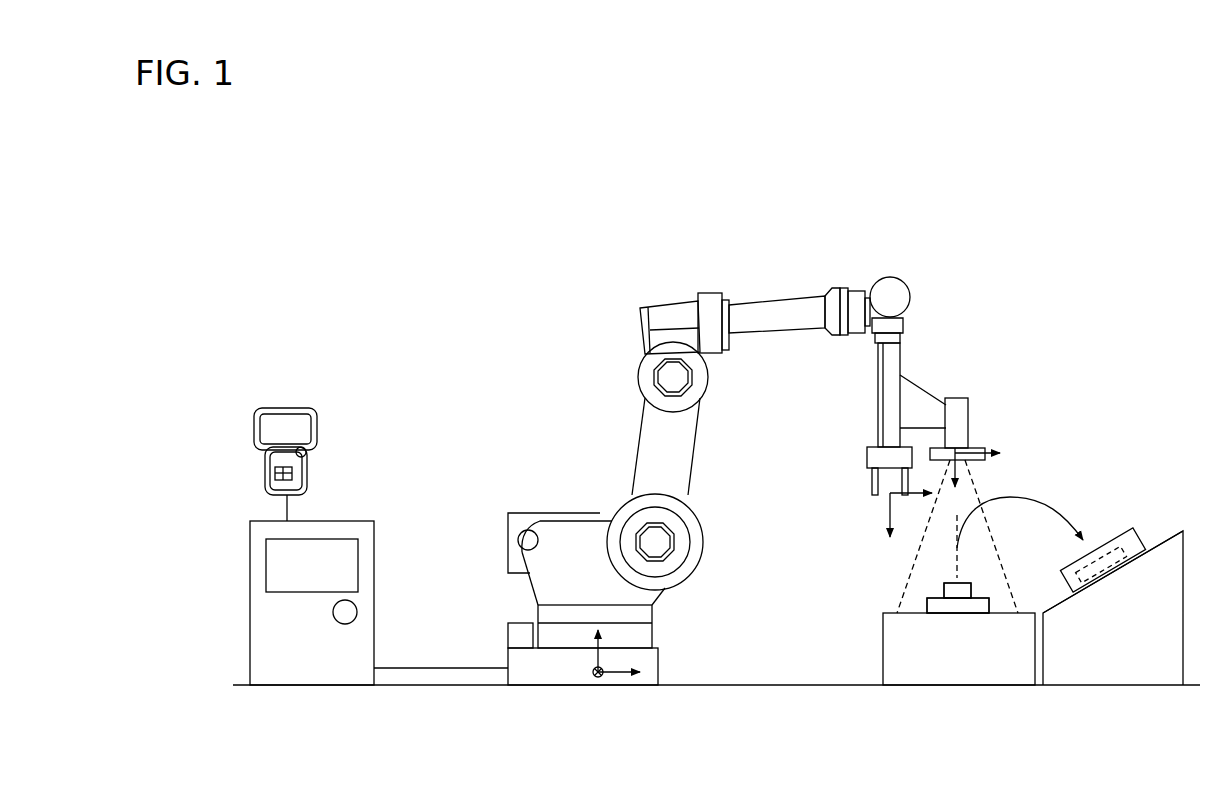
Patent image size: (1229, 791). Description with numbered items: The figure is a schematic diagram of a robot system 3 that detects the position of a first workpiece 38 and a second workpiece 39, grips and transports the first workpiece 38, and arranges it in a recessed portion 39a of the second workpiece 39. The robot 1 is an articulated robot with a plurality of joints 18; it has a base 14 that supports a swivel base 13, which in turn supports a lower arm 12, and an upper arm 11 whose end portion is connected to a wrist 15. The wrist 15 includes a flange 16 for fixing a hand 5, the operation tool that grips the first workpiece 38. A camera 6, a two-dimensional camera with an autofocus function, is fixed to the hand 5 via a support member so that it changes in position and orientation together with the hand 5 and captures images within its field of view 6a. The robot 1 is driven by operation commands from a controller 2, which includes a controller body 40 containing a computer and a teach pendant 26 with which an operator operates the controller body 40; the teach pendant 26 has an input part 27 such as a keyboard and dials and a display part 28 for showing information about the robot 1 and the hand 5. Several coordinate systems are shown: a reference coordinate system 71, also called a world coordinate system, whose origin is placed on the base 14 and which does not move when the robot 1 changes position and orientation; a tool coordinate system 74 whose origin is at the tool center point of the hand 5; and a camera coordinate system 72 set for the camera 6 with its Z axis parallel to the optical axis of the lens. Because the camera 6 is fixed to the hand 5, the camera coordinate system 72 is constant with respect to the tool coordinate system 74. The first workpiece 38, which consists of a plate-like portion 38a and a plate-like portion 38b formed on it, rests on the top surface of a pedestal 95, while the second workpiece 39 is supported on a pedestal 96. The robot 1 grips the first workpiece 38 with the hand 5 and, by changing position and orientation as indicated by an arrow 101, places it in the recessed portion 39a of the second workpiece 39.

The robot 1 is at (708, 293).
The controller 2 is at (388, 395).
The robot system 3 is at (553, 285).
The hand 5 is at (878, 388).
The camera 6 is at (968, 422).
The field of view 6a is at (912, 563).
The upper arm 11 is at (777, 312).
The lower arm 12 is at (650, 405).
The swivel base 13 is at (540, 570).
The base 14 is at (520, 660).
The wrist 15 is at (893, 322).
The flange 16 is at (897, 337).
The joints 18 is at (623, 510).
The teach pendant 26 is at (265, 478).
The input part 27 is at (290, 471).
The display part 28 is at (298, 427).
The first workpiece 38 is at (778, 572).
The plate-like portion 38a is at (927, 606).
The plate-like portion 38b is at (944, 590).
The second workpiece 39 is at (1153, 531).
The recessed portion 39a is at (1105, 556).
The controller body 40 is at (358, 519).
The reference coordinate system 71 is at (612, 680).
The camera coordinate system 72 is at (975, 450).
The tool coordinate system 74 is at (876, 481).
The pedestal 95 is at (937, 663).
The pedestal 96 is at (1140, 663).
The arrow 101 is at (1047, 497).